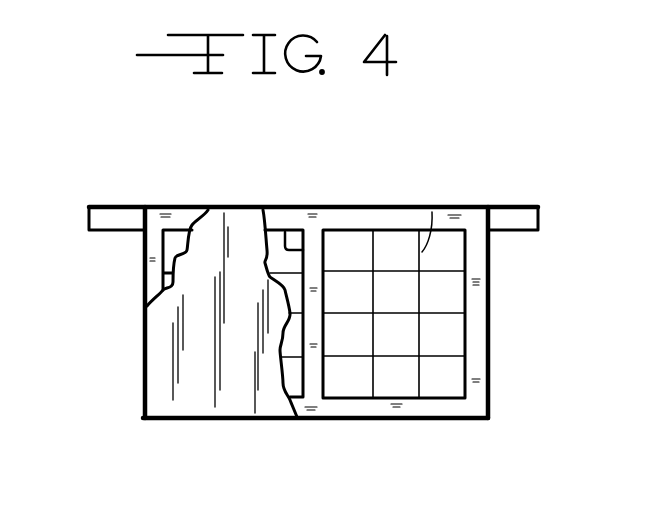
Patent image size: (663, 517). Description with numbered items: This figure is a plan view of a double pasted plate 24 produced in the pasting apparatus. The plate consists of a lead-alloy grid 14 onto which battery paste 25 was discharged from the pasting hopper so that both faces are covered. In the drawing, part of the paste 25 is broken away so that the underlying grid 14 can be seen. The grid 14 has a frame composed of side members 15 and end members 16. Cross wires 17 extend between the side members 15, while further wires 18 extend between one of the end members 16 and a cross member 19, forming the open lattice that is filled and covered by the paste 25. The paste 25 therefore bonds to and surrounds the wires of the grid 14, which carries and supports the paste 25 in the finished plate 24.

The grid 14 is at (316, 311).
The side members 15 is at (398, 206).
The end members 16 is at (143, 246).
The cross wires 17 is at (400, 311).
The wires 18 is at (393, 353).
The cross member 19 is at (297, 207).
The double pasted plate 24 is at (181, 430).
The paste 25 is at (170, 361).